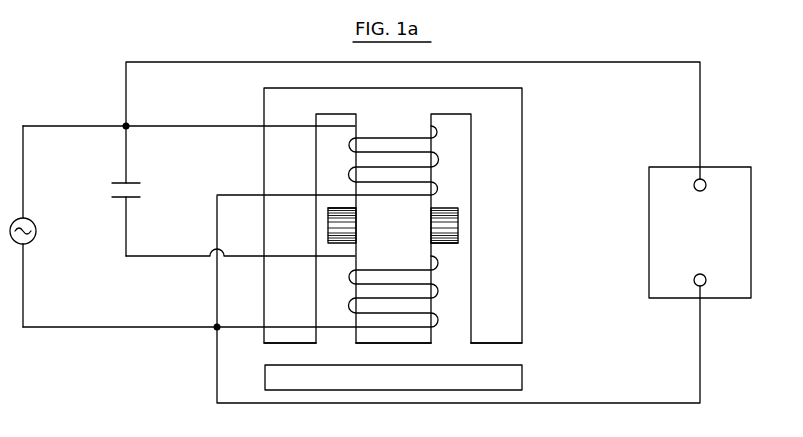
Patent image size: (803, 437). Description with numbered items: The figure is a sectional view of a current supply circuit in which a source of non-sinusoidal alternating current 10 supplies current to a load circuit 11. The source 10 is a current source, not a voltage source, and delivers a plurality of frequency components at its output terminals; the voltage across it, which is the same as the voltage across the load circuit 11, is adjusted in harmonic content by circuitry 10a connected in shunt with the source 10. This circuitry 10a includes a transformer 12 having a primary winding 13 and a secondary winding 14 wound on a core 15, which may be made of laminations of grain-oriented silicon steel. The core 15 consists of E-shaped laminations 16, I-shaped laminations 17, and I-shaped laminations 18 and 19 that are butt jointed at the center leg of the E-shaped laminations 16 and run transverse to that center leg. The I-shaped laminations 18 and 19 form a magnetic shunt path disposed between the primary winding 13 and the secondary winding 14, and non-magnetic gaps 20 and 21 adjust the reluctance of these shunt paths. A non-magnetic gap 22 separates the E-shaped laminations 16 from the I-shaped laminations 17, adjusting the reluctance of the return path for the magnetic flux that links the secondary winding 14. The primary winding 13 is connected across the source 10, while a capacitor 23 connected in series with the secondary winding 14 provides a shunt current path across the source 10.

The source of non-sinusoidal alternating current 10 is at (37, 231).
The circuitry 10a is at (296, 55).
The load circuit 11 is at (752, 245).
The transformer 12 is at (300, 234).
The primary winding 13 is at (440, 161).
The secondary winding 14 is at (440, 292).
The core 15 is at (368, 249).
The E-shaped laminations 16 is at (470, 106).
The I-shaped laminations 17 is at (513, 381).
The I-shaped laminations 18 is at (335, 228).
The I-shaped laminations 19 is at (450, 225).
The non-magnetic gap 20 is at (321, 217).
The non-magnetic gap 21 is at (462, 234).
The non-magnetic gap 22 is at (278, 355).
The capacitor 23 is at (146, 193).